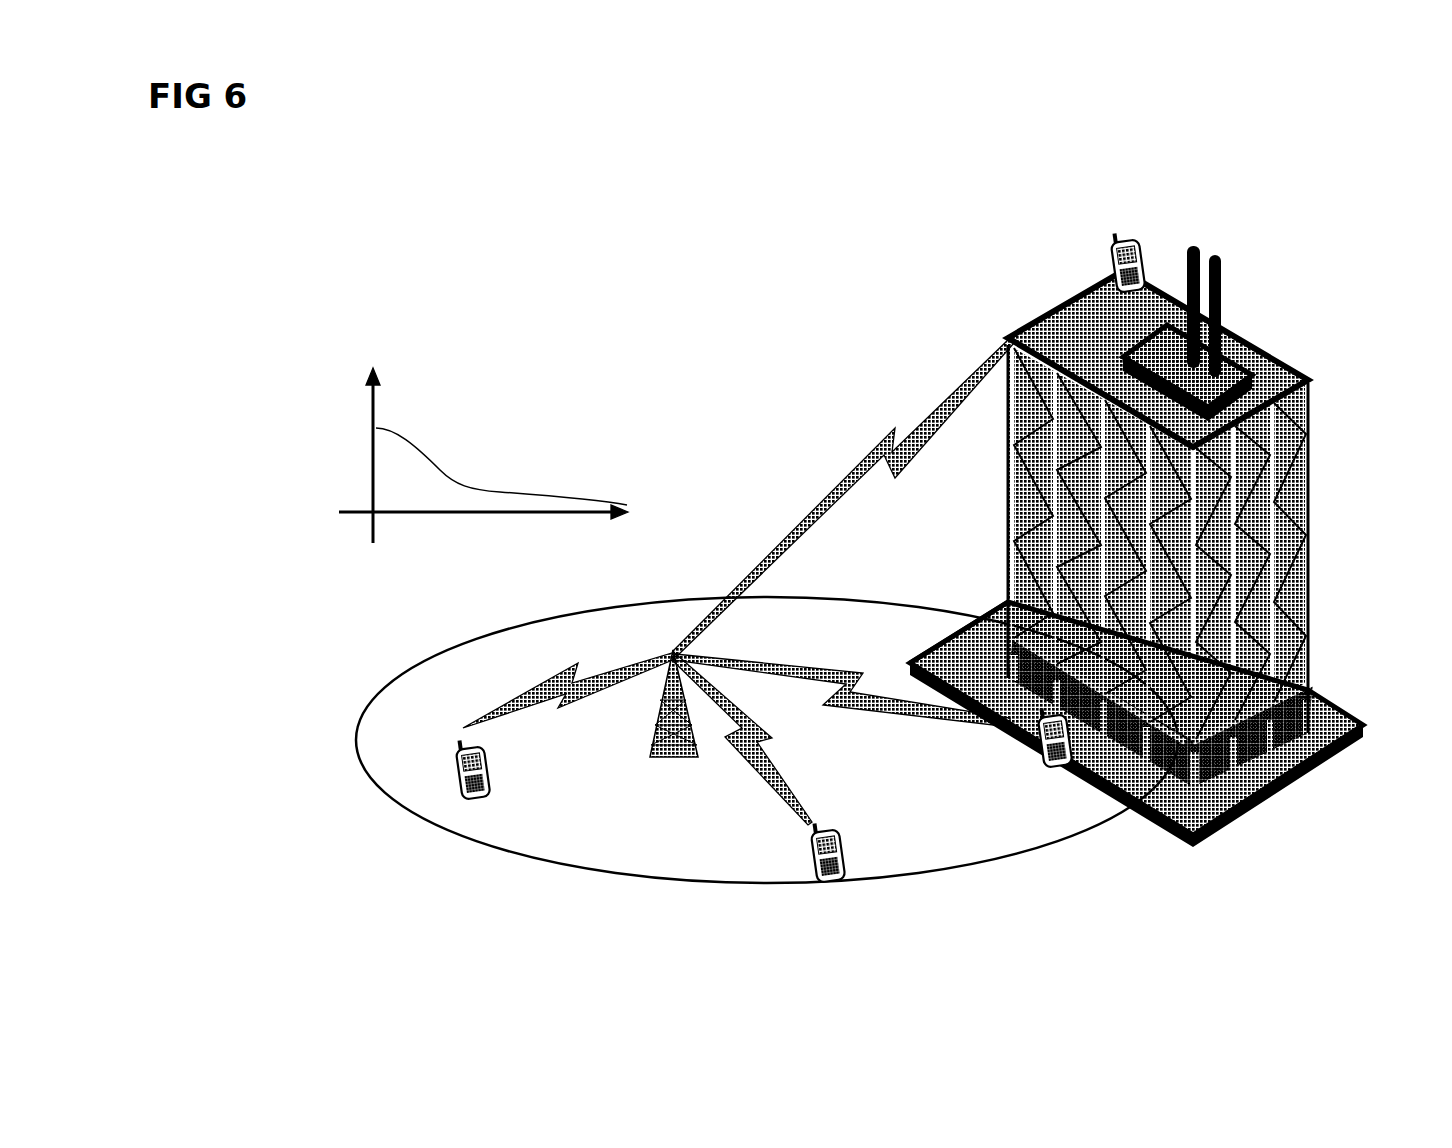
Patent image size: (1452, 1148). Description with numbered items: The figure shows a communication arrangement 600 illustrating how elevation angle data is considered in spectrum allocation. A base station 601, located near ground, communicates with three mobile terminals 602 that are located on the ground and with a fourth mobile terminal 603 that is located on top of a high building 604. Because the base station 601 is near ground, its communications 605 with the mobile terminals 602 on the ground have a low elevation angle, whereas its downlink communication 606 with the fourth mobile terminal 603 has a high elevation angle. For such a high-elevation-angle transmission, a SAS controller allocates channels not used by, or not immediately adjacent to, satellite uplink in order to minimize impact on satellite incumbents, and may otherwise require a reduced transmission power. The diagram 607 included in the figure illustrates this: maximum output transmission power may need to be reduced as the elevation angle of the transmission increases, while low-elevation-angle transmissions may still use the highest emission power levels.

The communication arrangement 600 is at (1325, 152).
The base station 601 is at (664, 757).
The mobile terminals 602 is at (482, 808).
The fourth mobile terminal 603 is at (1137, 237).
The high building 604 is at (1310, 427).
The communications 605 is at (557, 677).
The downlink communication 606 is at (890, 438).
The diagram 607 is at (347, 467).